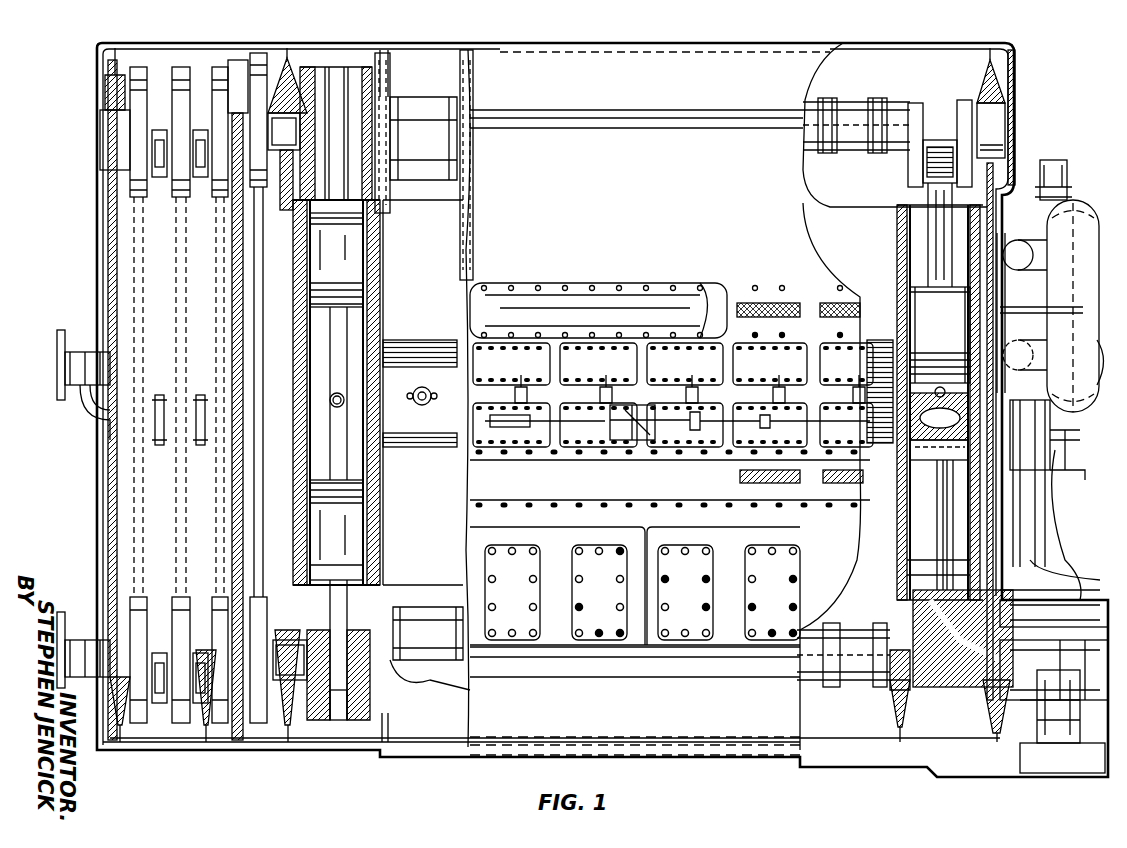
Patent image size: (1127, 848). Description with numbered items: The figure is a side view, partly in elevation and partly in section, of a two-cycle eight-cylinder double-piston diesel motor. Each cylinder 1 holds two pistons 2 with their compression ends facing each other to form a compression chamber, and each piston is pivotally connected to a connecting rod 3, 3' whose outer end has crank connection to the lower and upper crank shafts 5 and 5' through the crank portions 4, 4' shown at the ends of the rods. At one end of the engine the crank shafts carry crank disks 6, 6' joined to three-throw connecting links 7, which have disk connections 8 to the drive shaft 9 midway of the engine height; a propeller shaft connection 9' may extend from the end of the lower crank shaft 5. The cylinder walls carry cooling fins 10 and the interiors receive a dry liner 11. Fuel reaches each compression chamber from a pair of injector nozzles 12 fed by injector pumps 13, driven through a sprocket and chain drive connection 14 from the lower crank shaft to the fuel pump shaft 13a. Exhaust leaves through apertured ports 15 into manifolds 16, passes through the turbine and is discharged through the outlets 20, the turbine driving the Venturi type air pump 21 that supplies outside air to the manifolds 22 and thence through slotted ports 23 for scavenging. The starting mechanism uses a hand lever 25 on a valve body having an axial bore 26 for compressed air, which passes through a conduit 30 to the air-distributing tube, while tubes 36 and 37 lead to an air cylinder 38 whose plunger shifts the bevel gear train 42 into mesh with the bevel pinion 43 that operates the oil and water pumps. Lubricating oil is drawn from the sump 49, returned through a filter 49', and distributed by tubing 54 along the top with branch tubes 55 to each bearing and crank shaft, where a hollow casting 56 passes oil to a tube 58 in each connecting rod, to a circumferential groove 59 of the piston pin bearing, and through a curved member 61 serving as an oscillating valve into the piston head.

The cylinder 1 is at (308, 372).
The piston 2 is at (330, 312).
The connecting rod 3 is at (635, 393).
The connecting rod 3' is at (910, 235).
The crank 4 is at (661, 660).
The crank 4' is at (681, 135).
The lower crank shaft 5 is at (565, 650).
The upper crank shaft 5' is at (589, 108).
The crank disk 6 is at (206, 434).
The crank disk 6' is at (181, 110).
The three-throw connecting link 7 is at (184, 240).
The disk connection 8 is at (180, 460).
The drive shaft 9 is at (66, 387).
The propeller shaft connection 9' is at (83, 634).
The fins 10 is at (425, 360).
The liner 11 is at (365, 320).
The injector nozzle 12 is at (337, 400).
The injector pump 13 is at (630, 445).
The fuel pump shaft 13a is at (745, 448).
The sprocket and chain drive connection 14 is at (1022, 450).
The apertured port 15 is at (790, 305).
The manifold 16 is at (725, 300).
The outlet 20 is at (1055, 162).
The air pump 21 is at (1085, 215).
The manifold 22 is at (566, 498).
The slotted port 23 is at (770, 485).
The hand lever 25 is at (1065, 440).
The axial bore 26 is at (1105, 360).
The conduit 30 is at (1080, 477).
The tube 36 is at (1060, 530).
The tube 37 is at (1065, 571).
The air cylinder 38 is at (1050, 591).
The bevel gear train 42 is at (1054, 612).
The bevel pinion 43 is at (1057, 670).
The sump 49 is at (1062, 744).
The filter 49' is at (1014, 714).
The tubing 54 is at (385, 52).
The branch tube 55 is at (105, 68).
The hollow casting 56 is at (935, 665).
The tube 58 is at (930, 542).
The circumferential groove 59 is at (885, 455).
The curved member 61 is at (939, 426).